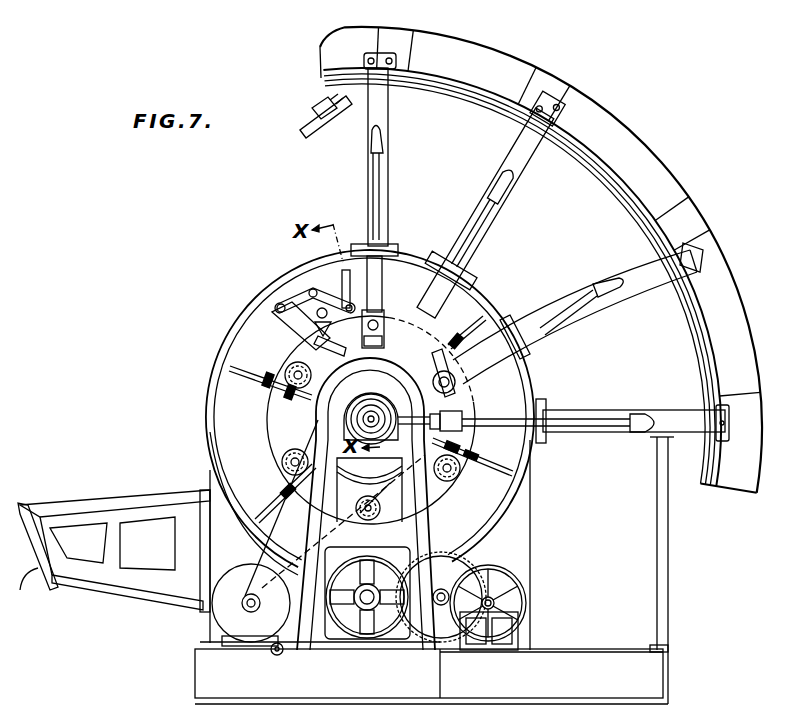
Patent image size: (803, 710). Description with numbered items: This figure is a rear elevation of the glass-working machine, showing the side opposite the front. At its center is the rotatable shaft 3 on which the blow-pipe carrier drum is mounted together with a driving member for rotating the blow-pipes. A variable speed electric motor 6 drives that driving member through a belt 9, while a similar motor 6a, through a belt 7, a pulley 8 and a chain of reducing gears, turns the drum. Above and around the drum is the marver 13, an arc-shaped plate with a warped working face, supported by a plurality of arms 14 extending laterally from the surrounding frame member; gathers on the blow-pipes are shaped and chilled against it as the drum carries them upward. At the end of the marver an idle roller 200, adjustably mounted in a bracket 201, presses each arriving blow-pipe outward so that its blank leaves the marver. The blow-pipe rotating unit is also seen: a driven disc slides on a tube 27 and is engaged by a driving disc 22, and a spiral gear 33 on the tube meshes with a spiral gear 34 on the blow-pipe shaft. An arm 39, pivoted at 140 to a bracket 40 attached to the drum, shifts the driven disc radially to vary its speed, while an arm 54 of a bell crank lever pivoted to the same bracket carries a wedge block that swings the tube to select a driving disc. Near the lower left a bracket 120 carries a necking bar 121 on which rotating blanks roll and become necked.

The rotatable shaft 3 is at (358, 417).
The variable speed electric motor 6 is at (216, 613).
The motor 6a is at (368, 618).
The belt 7 is at (437, 573).
The pulley 8 is at (527, 603).
The belt 9 is at (258, 556).
The marver 13 is at (628, 150).
The arms 14 is at (520, 153).
The driving disc 22 is at (380, 501).
The tube 27 is at (350, 288).
The spiral gear 33 is at (312, 347).
The spiral gear 34 is at (433, 308).
The arm 39 is at (331, 298).
The bracket 40 is at (307, 342).
The arm 54 is at (290, 306).
The bracket 120 is at (121, 497).
The necking bar 121 is at (33, 596).
The pivot 140 is at (280, 307).
The idle roller 200 is at (307, 140).
The bracket 201 is at (331, 100).